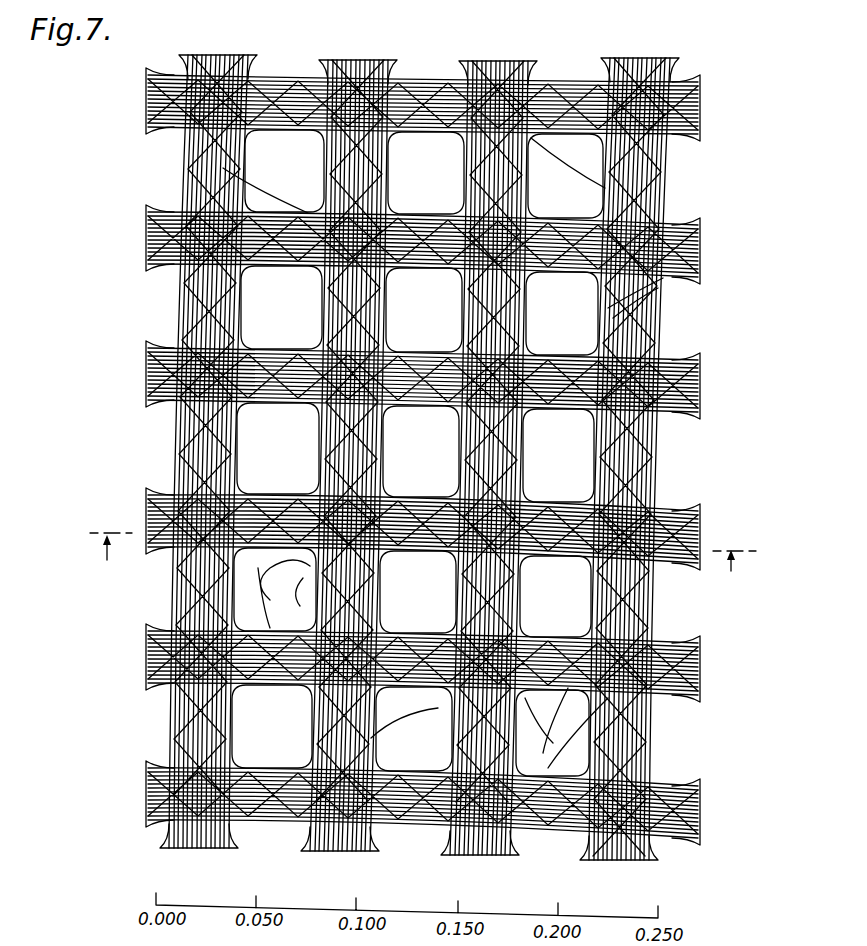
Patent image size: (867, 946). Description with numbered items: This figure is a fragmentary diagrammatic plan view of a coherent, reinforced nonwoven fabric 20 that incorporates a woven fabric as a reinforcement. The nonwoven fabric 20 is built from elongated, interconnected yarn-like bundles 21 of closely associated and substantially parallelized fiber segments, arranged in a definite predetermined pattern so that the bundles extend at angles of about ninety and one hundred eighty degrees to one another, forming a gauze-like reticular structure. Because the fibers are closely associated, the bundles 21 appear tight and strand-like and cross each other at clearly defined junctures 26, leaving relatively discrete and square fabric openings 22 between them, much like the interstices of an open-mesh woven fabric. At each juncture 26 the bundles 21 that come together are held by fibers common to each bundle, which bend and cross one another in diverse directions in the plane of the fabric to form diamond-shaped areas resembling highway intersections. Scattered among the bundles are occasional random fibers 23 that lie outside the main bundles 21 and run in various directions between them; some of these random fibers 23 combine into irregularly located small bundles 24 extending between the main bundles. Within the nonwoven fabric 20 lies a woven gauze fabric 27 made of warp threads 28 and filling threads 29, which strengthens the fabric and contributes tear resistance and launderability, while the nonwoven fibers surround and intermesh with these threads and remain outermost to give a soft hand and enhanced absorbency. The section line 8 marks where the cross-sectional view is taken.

The reinforced nonwoven fabric 20 is at (411, 471).
The yarn-like bundles of fiber segments 21 is at (176, 426).
The fabric openings 22 is at (578, 322).
The random fibers 23 is at (284, 594).
The small bundles 24 is at (543, 732).
The junctures 26 is at (640, 283).
The woven gauze fabric 27 is at (128, 648).
The warp threads 28 is at (190, 838).
The filling threads 29 is at (140, 778).
The section line 8- 8 is at (423, 536).